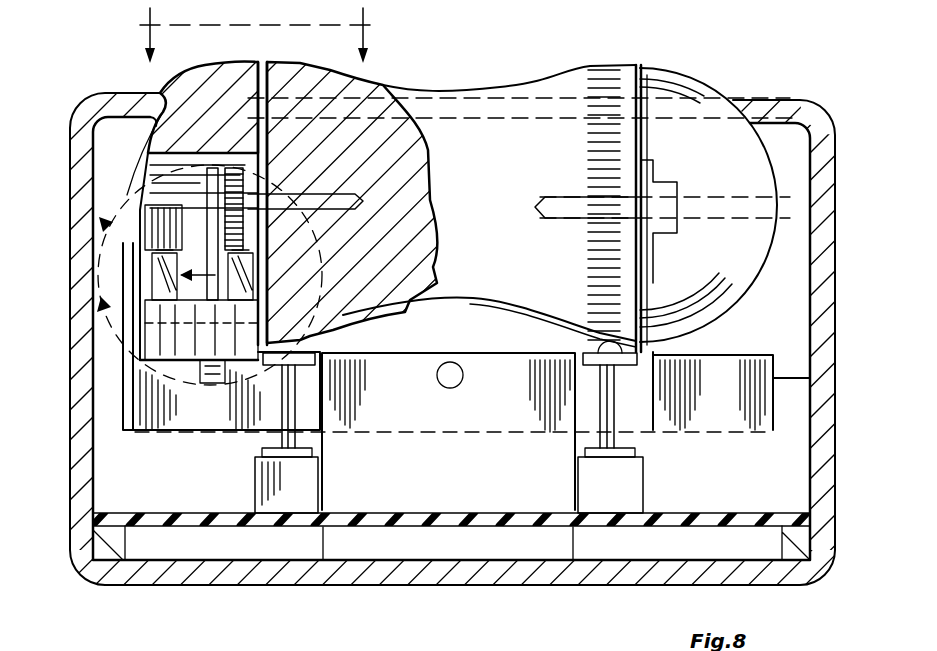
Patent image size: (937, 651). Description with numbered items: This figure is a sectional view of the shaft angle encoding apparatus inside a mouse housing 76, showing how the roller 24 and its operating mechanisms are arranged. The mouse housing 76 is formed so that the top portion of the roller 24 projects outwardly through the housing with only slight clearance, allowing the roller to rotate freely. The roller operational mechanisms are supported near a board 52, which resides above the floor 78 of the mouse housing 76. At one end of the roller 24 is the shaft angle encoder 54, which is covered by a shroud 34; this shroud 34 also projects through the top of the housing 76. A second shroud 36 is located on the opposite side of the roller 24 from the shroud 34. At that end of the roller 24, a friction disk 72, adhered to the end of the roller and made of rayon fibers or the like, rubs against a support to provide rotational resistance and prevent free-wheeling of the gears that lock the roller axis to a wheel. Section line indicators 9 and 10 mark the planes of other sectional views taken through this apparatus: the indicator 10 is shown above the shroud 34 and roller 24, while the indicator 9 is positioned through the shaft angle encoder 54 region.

The section line 9- 9 is at (209, 275).
The section line 10- 10 is at (256, 35).
The roller 24 is at (493, 118).
The shroud 34 is at (233, 80).
The shroud 36 is at (657, 83).
The board 52 is at (360, 518).
The shaft angle encoder 54 is at (130, 213).
The friction disk 72 is at (647, 110).
The mouse housing 76 is at (827, 371).
The floor 78 is at (175, 575).